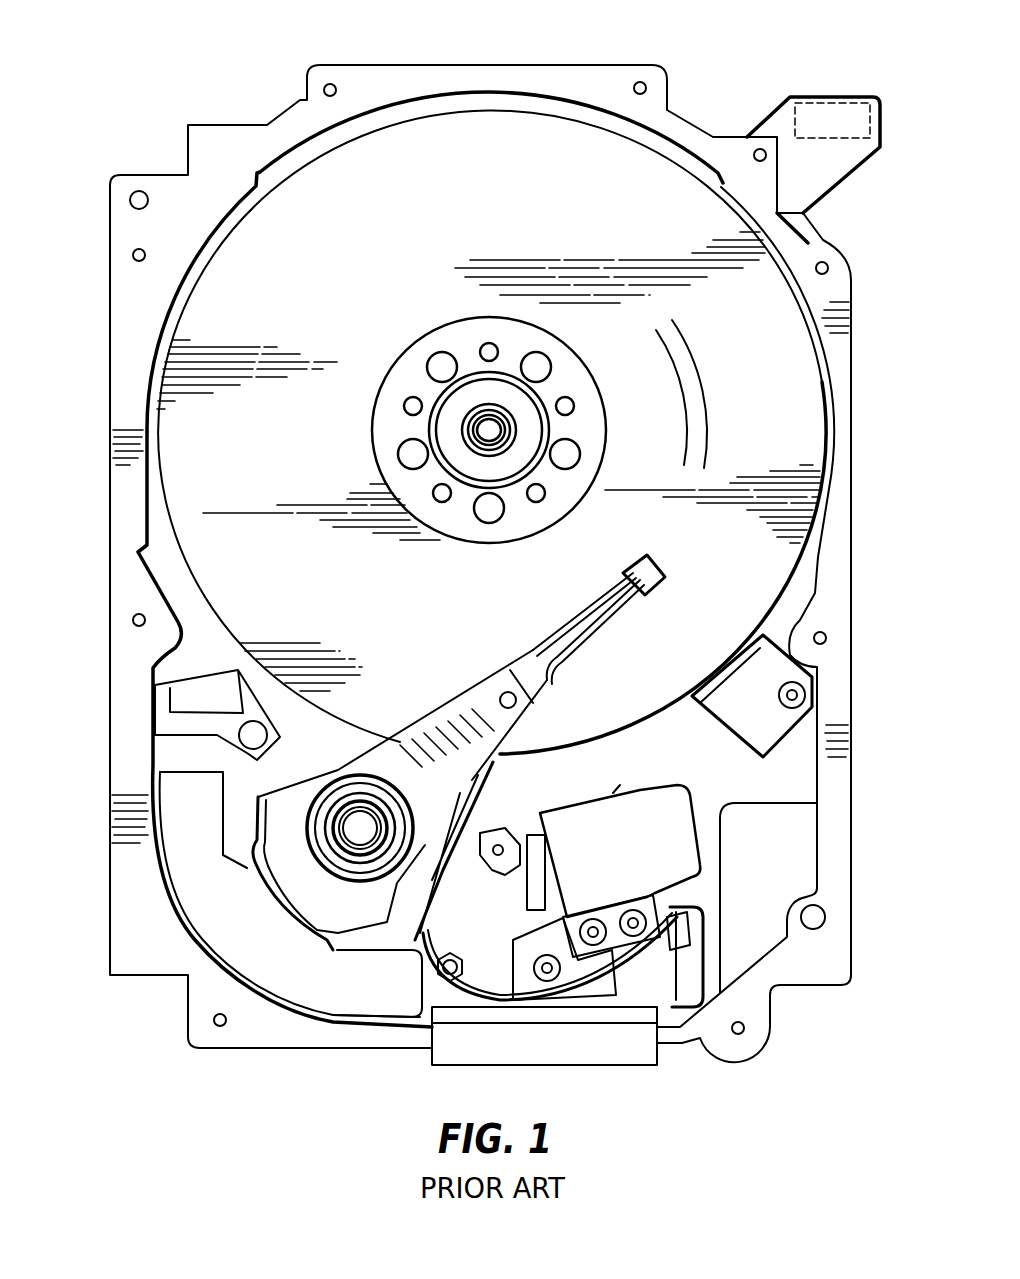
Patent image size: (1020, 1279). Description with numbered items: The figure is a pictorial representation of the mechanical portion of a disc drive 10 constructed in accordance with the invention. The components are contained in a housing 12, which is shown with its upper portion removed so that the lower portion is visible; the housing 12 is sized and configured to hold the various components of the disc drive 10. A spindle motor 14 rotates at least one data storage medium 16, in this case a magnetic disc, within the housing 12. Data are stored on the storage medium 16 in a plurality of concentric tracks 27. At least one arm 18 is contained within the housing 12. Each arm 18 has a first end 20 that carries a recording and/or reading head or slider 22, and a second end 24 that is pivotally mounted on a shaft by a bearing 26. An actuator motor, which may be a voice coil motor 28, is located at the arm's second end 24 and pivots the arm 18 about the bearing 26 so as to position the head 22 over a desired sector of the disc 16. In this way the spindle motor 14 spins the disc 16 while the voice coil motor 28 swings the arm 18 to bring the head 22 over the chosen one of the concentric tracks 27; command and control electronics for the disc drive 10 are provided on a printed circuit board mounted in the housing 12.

The disc drive 10 is at (166, 110).
The housing 12 is at (624, 78).
The spindle motor 14 is at (478, 432).
The data storage medium 16 is at (402, 236).
The arm 18 is at (472, 715).
The first end 20 is at (590, 600).
The head 22 is at (648, 575).
The second end 24 is at (385, 772).
The bearing 26 is at (350, 825).
The concentric tracks 27 is at (702, 402).
The voice coil motor 28 is at (254, 948).